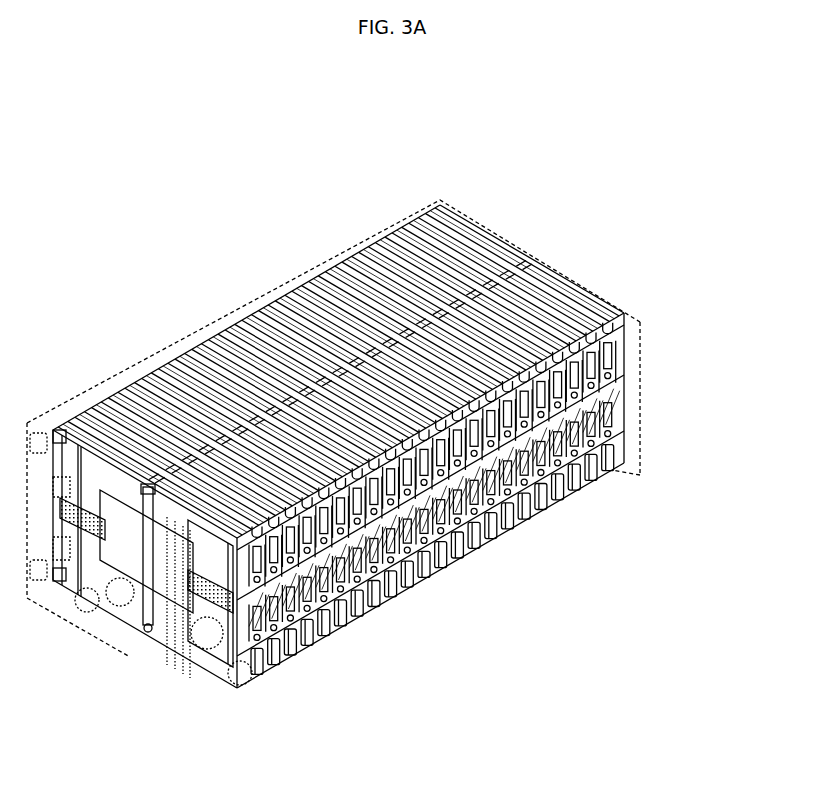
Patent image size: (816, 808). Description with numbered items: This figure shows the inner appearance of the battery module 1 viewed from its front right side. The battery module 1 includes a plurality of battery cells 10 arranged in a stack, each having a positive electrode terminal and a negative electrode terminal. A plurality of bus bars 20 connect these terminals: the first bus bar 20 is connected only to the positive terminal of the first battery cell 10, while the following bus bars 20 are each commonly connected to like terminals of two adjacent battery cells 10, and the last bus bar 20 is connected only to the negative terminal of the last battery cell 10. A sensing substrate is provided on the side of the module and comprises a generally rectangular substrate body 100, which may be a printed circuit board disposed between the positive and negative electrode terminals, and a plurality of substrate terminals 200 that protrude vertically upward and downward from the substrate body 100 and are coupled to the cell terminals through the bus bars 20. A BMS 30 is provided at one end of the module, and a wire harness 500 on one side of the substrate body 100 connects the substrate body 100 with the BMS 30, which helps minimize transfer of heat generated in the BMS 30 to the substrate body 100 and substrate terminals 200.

The battery module 1 is at (594, 150).
The battery cell 10 is at (200, 338).
The bus bar 20 is at (612, 366).
The BMS 30 is at (130, 632).
The substrate body 100 is at (612, 418).
The substrate terminal 200 is at (612, 394).
The wire harness 500 is at (215, 668).